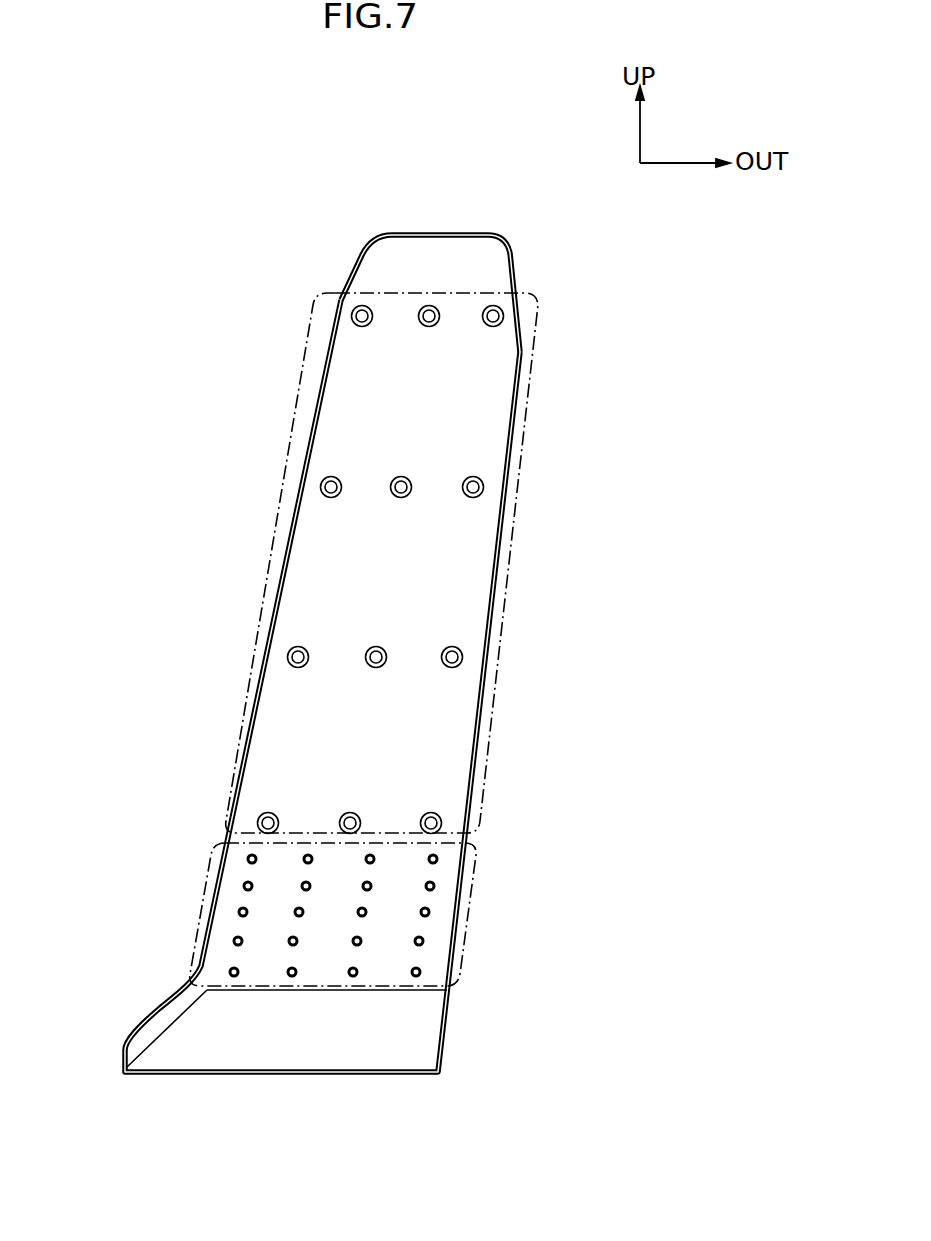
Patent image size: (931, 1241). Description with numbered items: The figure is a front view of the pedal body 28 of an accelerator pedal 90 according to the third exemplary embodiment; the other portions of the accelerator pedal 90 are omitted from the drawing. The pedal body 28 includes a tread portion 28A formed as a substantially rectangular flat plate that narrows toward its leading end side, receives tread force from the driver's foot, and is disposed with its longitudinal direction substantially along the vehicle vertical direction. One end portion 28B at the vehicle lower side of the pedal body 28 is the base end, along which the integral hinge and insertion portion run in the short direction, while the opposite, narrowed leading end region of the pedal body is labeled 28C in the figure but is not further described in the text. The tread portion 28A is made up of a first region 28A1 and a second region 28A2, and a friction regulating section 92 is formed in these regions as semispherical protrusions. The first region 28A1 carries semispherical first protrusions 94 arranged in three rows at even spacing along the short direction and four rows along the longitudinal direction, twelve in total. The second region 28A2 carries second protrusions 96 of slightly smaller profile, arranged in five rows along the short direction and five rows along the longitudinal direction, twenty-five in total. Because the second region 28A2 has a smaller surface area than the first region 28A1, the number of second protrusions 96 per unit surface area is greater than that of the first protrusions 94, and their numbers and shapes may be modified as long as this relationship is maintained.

The pedal body 28 is at (360, 612).
The tread portion 28A is at (360, 602).
The first region 28A1 is at (507, 588).
The second region 28A2 is at (471, 918).
The one end portion 28B is at (412, 1046).
The upper wall portion 28C is at (395, 265).
The accelerator pedal 90 is at (386, 612).
The friction regulating section 92 is at (548, 432).
The first protrusions 94 is at (450, 646).
The second protrusions 96 is at (354, 966).